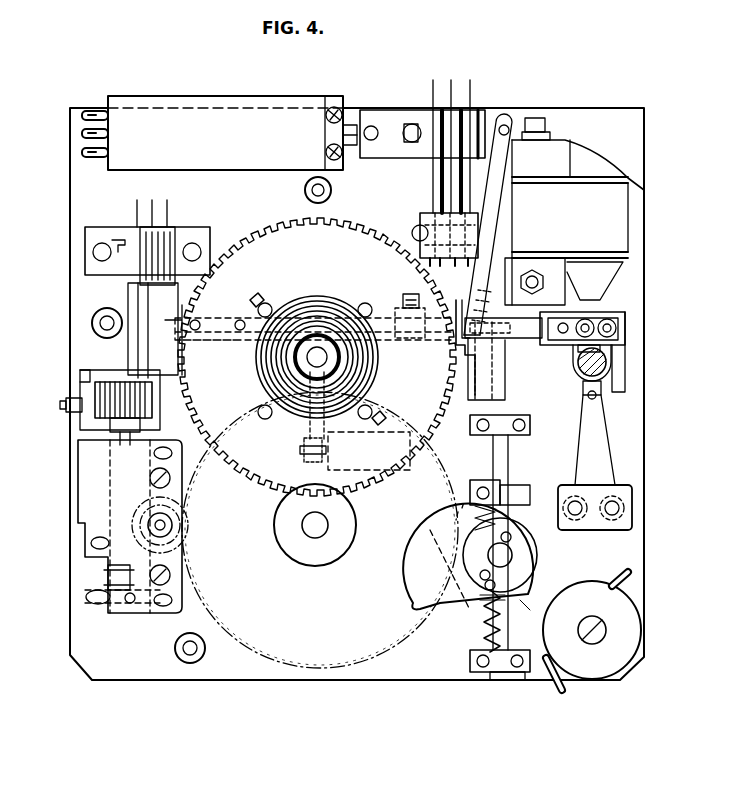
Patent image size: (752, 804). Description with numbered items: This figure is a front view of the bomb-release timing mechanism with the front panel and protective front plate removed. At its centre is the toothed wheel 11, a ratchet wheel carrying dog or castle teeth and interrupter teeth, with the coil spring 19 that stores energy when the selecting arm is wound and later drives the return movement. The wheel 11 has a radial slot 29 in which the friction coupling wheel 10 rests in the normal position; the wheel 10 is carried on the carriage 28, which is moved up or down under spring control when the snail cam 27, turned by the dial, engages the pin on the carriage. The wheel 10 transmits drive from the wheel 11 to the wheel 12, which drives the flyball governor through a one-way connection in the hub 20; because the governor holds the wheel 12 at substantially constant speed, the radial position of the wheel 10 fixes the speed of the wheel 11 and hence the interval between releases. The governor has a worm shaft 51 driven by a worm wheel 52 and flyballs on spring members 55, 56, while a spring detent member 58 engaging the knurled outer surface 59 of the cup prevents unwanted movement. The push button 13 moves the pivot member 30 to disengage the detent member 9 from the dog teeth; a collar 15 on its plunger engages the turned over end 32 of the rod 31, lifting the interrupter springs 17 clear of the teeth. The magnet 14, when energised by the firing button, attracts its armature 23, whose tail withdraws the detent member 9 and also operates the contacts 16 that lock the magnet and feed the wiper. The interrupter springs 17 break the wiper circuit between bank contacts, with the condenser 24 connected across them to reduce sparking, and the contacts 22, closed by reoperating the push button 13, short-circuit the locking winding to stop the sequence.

The detent member 9 is at (456, 362).
The friction coupling wheel 10 is at (300, 456).
The toothed wheel 11 is at (265, 232).
The wheel 12 is at (305, 660).
The push button 13 is at (608, 360).
The magnet 14 is at (628, 222).
The collar 15 is at (620, 338).
The contacts 16 is at (445, 200).
The interrupter springs 17 is at (140, 358).
The coil spring 19 is at (300, 305).
The hub 20 is at (150, 525).
The contacts 22 is at (605, 450).
The armature 23 is at (500, 152).
The condenser 24 is at (195, 108).
The snail cam 27 is at (445, 600).
The carriage 28 is at (462, 485).
The radial slot 29 is at (306, 430).
The pivot member 30 is at (550, 375).
The rod 31 is at (431, 335).
The turned over end 32 is at (600, 313).
The worm shaft 51 is at (108, 436).
The worm wheel 52 is at (182, 542).
The spring member 55 is at (100, 425).
The spring member 56 is at (138, 436).
The spring detent member 58 is at (66, 418).
The knurled outer surface 59 is at (78, 390).